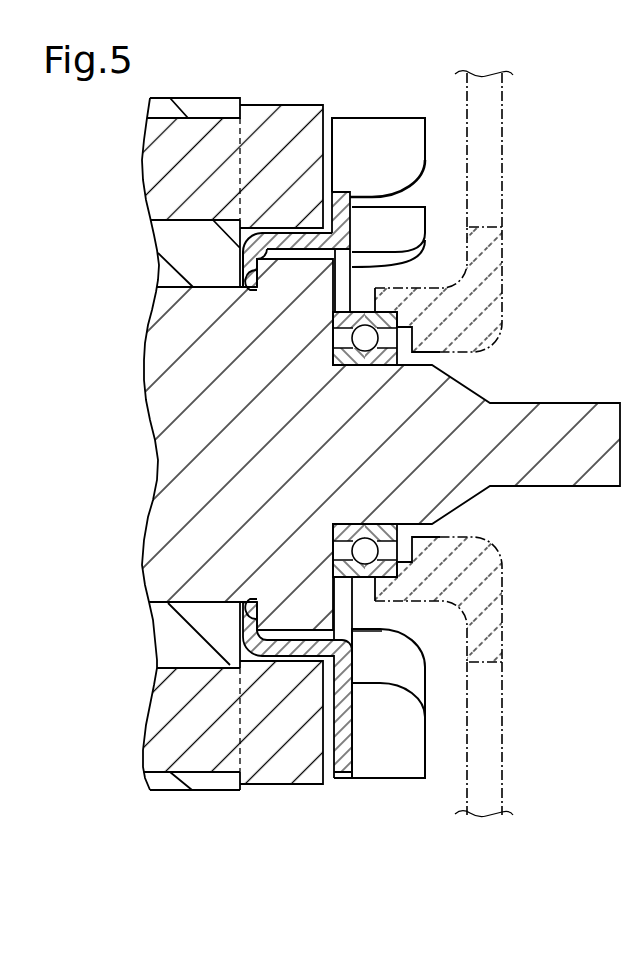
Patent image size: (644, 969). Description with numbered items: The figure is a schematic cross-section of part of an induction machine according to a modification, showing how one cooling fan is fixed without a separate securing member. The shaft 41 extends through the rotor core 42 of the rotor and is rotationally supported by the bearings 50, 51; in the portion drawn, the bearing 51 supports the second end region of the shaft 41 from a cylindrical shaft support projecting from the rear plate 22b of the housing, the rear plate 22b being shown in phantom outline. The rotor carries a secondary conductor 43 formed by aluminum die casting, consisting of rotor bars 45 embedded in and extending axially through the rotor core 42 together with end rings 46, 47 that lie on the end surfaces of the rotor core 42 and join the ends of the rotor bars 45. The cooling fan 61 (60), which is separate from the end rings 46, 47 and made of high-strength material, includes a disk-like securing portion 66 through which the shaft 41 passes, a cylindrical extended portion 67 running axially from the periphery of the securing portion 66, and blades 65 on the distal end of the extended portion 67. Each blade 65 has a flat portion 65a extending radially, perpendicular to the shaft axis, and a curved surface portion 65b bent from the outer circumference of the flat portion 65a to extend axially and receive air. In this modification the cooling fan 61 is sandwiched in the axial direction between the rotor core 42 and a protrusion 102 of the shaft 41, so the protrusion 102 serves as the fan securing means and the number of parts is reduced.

The shaft 41 is at (465, 385).
The rotor core 42 is at (160, 272).
The secondary conductor 43 is at (156, 208).
The rotor bars 45 is at (148, 172).
The end ring 46 is at (286, 143).
The end ring 47 is at (259, 104).
The bearing 50 is at (378, 444).
The bearing 51 is at (354, 366).
The cooling fan 60 is at (371, 187).
The cooling fan 61 is at (371, 187).
The blades 65 is at (446, 181).
The flat portion 65a is at (345, 192).
The curved surface portion 65b is at (418, 148).
The securing portion 66 is at (242, 263).
The extended portion 67 is at (291, 252).
The protrusion 102 is at (251, 292).
The rear plate 22b is at (504, 246).